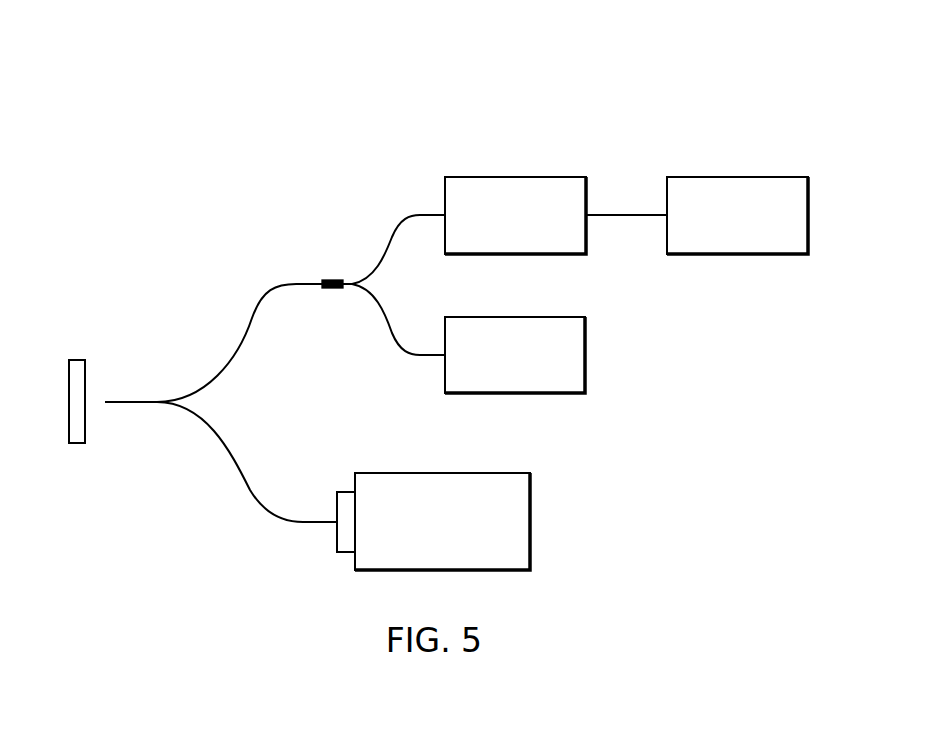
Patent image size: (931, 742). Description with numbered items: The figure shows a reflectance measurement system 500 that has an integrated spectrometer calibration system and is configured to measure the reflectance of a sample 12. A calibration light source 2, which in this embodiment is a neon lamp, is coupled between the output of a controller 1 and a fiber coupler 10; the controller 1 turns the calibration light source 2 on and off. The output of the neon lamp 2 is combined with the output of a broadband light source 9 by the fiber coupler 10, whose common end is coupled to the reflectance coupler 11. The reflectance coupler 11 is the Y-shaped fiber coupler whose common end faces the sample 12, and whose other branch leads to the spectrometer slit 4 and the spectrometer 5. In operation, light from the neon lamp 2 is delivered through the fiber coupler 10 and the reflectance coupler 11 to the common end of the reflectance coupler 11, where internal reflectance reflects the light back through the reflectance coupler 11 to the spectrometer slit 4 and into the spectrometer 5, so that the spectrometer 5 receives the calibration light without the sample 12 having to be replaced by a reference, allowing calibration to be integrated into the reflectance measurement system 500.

The reflectance measurement system 500 is at (308, 88).
The controller 1 is at (767, 177).
The calibration light source 2 is at (477, 177).
The spectrometer slit 4 is at (335, 540).
The spectrometer 5 is at (390, 572).
The broadband light source 9 is at (517, 393).
The fiber coupler 10 is at (412, 215).
The reflectance coupler 11 is at (258, 306).
The sample 12 is at (82, 358).